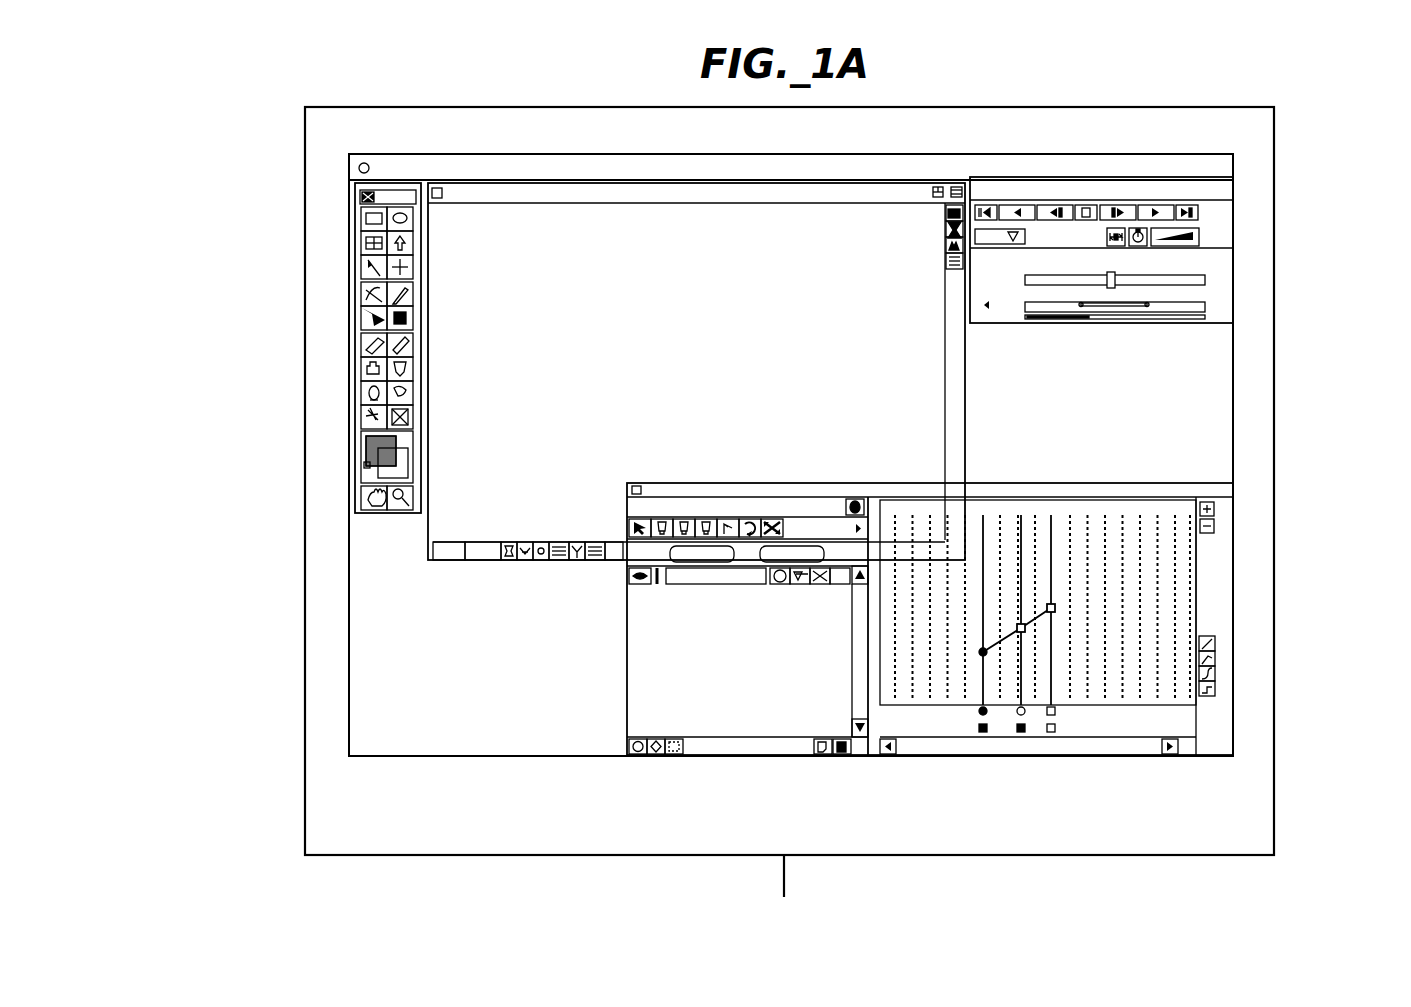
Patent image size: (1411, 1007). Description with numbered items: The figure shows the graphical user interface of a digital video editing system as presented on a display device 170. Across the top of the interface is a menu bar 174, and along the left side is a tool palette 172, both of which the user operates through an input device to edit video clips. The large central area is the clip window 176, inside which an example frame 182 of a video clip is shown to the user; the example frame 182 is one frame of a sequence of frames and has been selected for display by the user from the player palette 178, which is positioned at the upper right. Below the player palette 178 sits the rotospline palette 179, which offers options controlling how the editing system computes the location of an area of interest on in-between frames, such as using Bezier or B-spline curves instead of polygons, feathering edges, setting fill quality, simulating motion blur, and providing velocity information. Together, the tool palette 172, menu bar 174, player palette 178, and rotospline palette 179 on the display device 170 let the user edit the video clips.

The display device 170 is at (789, 502).
The tool palette 172 is at (362, 316).
The menu bar 174 is at (855, 166).
The clip window 176 is at (478, 193).
The player palette 178 is at (1200, 262).
The rotospline palette 179 is at (1204, 628).
The example frame 182 is at (500, 519).